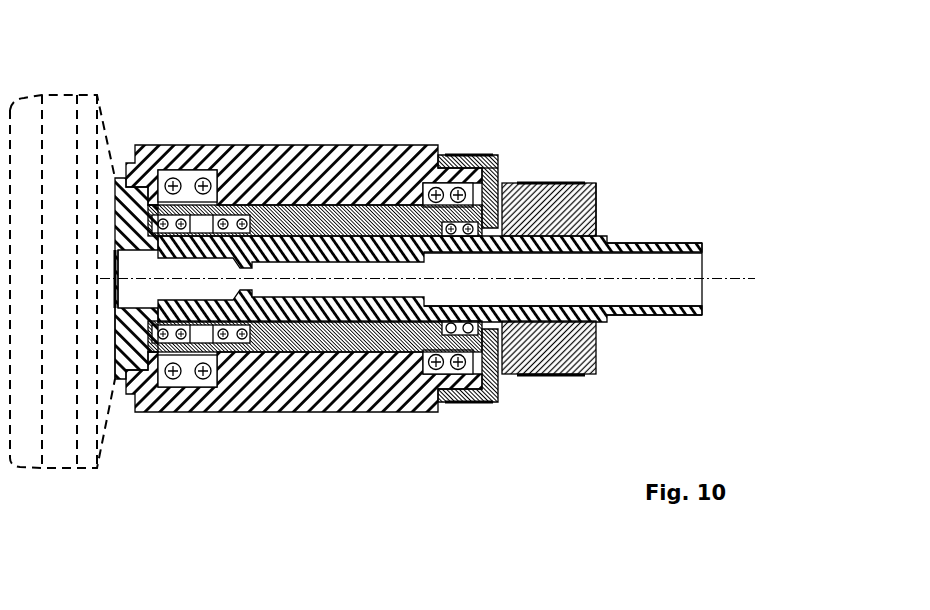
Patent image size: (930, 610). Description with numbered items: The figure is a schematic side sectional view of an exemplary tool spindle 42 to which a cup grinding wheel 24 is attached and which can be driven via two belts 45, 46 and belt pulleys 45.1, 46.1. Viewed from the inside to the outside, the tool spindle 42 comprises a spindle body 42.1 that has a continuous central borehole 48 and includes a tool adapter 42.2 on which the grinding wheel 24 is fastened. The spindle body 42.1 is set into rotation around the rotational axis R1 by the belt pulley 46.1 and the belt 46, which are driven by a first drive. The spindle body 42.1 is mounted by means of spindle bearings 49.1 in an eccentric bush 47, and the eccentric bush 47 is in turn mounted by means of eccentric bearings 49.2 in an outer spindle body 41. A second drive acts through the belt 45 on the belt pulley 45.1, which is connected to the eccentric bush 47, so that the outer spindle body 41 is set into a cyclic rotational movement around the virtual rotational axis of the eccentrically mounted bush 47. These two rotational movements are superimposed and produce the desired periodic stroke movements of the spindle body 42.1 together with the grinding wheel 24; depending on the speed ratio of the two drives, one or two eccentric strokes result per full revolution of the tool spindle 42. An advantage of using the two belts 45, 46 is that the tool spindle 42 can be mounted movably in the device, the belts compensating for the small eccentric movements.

The grinding wheel 24 is at (57, 492).
The outer spindle body 41 is at (371, 186).
The tool spindle 42 is at (410, 81).
The spindle body 42.1 is at (703, 245).
The tool adapter 42.2 is at (117, 333).
The belt 45 is at (464, 155).
The belt pulley 45.1 is at (501, 162).
The belt 46 is at (566, 183).
The belt pulley 46.1 is at (597, 208).
The eccentric bush 47 is at (332, 231).
The central borehole 48 is at (703, 293).
The spindle bearings 49.1 is at (115, 223).
The eccentric bearings 49.2 is at (187, 182).
The rotational axis R1 is at (444, 280).